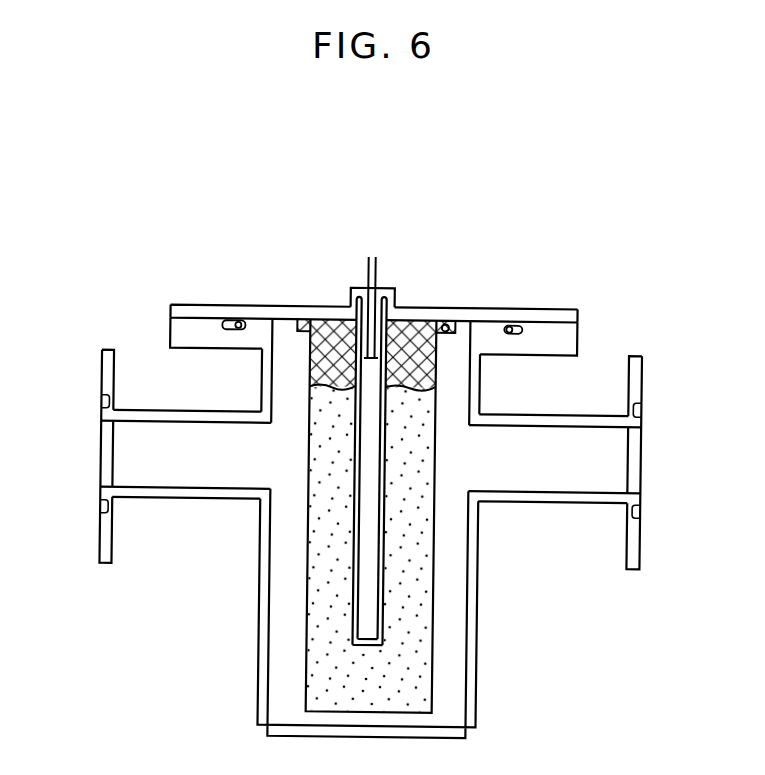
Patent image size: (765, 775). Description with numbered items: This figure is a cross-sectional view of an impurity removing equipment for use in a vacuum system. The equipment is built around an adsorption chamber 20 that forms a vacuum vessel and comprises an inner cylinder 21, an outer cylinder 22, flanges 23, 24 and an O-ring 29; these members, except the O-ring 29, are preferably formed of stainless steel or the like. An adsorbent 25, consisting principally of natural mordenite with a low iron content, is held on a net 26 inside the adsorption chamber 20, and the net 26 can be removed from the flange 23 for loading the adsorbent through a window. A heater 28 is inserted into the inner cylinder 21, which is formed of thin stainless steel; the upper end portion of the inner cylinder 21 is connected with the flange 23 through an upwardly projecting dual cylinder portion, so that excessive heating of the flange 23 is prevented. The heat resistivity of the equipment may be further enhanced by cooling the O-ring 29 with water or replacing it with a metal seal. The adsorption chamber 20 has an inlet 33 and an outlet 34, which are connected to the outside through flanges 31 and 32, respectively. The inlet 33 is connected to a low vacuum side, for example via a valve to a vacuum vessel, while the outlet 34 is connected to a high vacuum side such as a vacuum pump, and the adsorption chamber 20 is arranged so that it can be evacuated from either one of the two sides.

The adsorption chamber 20 is at (490, 724).
The inner cylinder 21 is at (396, 338).
The outer cylinder 22 is at (470, 603).
The flange 23 is at (562, 317).
The flange 24 is at (567, 343).
The adsorbent 25 is at (422, 497).
The net 26 is at (418, 350).
The heater 28 is at (374, 382).
The O-ring 29 is at (507, 327).
The flange 31 is at (632, 542).
The flange 32 is at (113, 548).
The inlet 33 is at (612, 466).
The outlet 34 is at (128, 459).